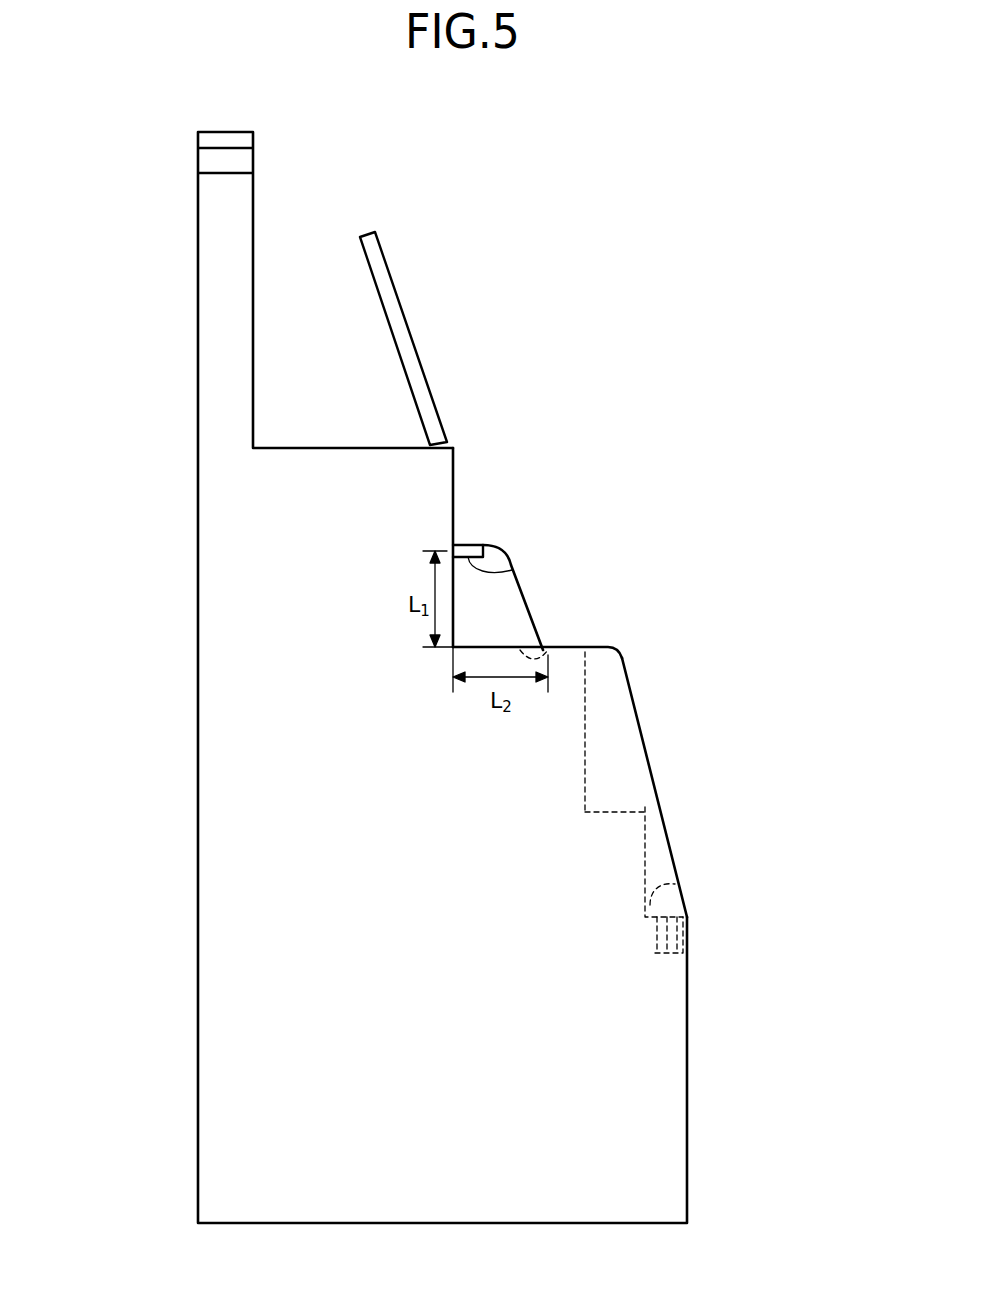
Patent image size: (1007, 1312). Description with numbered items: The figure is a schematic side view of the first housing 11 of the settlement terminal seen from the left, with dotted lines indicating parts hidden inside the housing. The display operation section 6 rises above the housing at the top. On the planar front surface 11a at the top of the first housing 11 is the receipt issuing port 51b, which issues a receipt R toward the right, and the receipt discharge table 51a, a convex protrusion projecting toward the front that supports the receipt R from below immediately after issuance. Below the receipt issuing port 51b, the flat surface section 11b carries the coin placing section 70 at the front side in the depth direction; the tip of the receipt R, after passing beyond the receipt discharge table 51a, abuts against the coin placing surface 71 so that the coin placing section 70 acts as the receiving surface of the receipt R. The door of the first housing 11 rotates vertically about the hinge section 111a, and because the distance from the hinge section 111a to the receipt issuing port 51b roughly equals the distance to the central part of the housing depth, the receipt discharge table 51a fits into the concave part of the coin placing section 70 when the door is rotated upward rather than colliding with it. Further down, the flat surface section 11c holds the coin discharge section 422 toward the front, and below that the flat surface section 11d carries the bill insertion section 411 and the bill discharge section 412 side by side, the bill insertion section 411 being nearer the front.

The display operation section 6 is at (415, 343).
The first housing 11 is at (197, 766).
The front surface 11a is at (453, 493).
The flat surface section 11b is at (497, 647).
The flat surface section 11c is at (658, 798).
The flat surface section 11d is at (657, 878).
The receipt discharge table 51a is at (512, 570).
The receipt issuing port 51b is at (453, 545).
The receipt R is at (520, 593).
The coin placing section 70 is at (585, 656).
The coin placing surface 71 is at (558, 652).
The hinge section 111a is at (453, 647).
The bill insertion section 411 is at (670, 918).
The bill discharge section 412 is at (657, 907).
The coin discharge section 422 is at (645, 823).